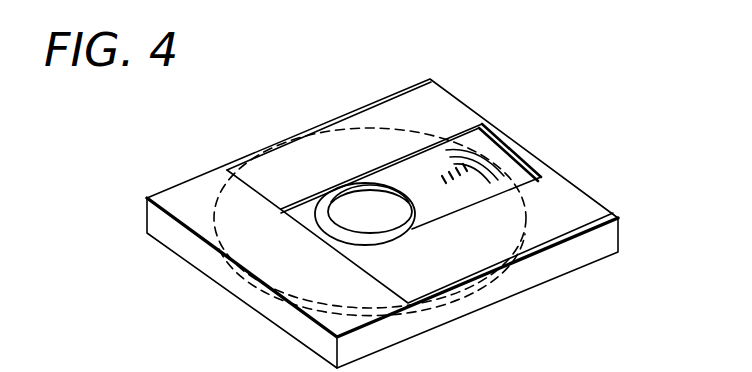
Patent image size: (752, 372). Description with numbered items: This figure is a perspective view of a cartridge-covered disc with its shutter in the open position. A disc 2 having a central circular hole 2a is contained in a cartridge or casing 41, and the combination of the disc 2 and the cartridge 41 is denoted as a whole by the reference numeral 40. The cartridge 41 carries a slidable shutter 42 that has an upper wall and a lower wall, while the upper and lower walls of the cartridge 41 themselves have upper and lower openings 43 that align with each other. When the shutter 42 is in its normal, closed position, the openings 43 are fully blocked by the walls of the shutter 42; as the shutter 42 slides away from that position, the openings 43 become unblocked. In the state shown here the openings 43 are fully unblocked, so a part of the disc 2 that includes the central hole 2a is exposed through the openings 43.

The disc 2 is at (426, 183).
The central circular hole 2a is at (335, 211).
The combination of the disc and the cartridge 40 is at (405, 210).
The cartridge 41 is at (587, 252).
The slidable shutter 42 is at (448, 105).
The upper and lower openings 43 is at (503, 200).